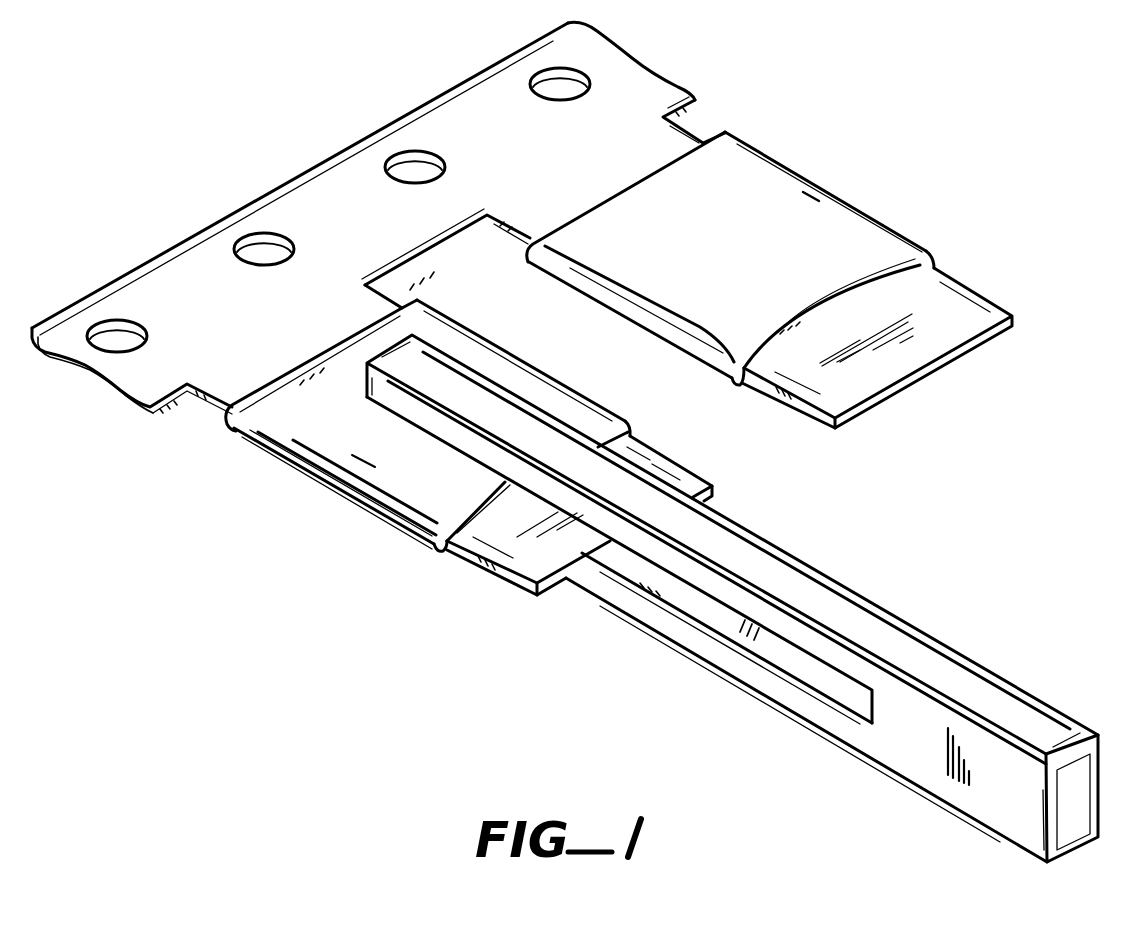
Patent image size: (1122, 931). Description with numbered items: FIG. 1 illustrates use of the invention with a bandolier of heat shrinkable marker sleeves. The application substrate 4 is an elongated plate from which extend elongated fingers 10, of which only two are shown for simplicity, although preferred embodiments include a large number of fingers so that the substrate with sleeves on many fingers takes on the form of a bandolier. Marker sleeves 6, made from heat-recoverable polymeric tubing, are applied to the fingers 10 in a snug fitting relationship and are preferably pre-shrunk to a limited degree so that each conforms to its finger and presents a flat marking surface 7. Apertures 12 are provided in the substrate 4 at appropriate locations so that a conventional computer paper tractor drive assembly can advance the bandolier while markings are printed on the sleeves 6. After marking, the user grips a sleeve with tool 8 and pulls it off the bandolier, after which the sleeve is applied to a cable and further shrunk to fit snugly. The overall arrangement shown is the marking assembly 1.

The retaining clip assembly 1 is at (260, 699).
The application substrate 4 is at (378, 218).
The sleeves 6 is at (777, 162).
The flat marking surface 7 is at (772, 258).
The tool 8 is at (740, 662).
The elongated fingers 10 is at (950, 367).
The apertures 12 is at (557, 88).